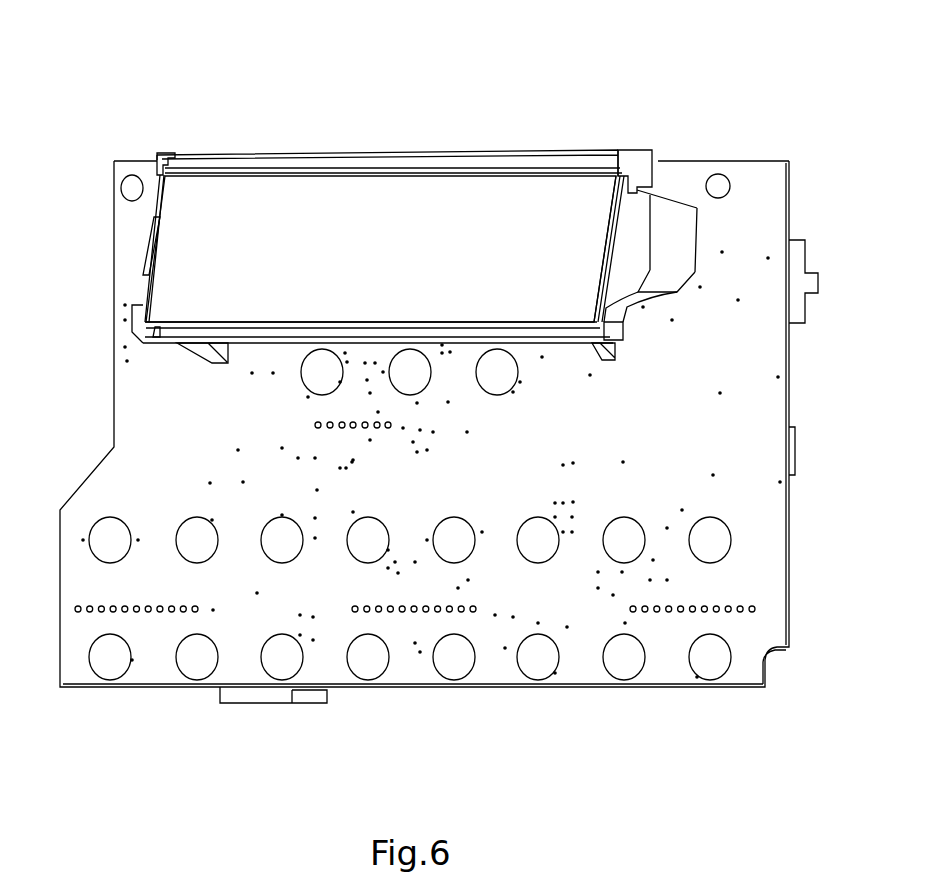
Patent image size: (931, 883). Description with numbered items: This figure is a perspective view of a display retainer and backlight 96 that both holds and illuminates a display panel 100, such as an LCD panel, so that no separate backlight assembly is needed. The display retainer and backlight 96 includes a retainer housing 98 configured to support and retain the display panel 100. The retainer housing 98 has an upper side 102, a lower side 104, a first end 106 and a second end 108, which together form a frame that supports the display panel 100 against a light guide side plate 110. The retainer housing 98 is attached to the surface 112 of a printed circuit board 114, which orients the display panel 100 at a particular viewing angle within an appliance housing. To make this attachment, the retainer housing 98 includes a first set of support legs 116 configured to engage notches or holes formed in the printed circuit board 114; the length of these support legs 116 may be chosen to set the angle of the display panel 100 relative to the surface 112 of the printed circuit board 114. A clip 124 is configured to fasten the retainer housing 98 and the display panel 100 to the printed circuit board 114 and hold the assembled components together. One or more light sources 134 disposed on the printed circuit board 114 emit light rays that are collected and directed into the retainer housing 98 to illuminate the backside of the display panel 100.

The display retainer and backlight 96 is at (207, 86).
The retainer housing 98 is at (144, 362).
The display panel 100 is at (178, 245).
The upper side 102 is at (412, 258).
The lower side 104 is at (289, 358).
The first end 106 is at (130, 283).
The second end 108 is at (658, 325).
The light guide side plate 110 is at (520, 337).
The surface 112 is at (470, 432).
The printed circuit board 114 is at (755, 427).
The first set of support legs 116 is at (203, 345).
The clip 124 is at (377, 160).
The light sources 134 is at (719, 216).